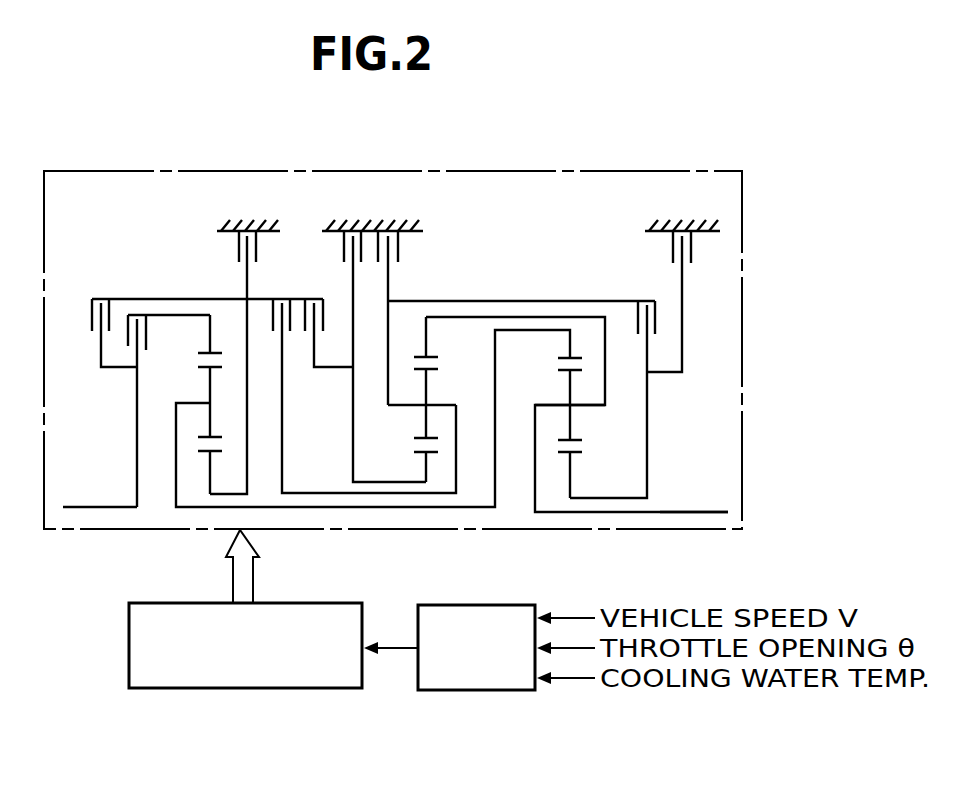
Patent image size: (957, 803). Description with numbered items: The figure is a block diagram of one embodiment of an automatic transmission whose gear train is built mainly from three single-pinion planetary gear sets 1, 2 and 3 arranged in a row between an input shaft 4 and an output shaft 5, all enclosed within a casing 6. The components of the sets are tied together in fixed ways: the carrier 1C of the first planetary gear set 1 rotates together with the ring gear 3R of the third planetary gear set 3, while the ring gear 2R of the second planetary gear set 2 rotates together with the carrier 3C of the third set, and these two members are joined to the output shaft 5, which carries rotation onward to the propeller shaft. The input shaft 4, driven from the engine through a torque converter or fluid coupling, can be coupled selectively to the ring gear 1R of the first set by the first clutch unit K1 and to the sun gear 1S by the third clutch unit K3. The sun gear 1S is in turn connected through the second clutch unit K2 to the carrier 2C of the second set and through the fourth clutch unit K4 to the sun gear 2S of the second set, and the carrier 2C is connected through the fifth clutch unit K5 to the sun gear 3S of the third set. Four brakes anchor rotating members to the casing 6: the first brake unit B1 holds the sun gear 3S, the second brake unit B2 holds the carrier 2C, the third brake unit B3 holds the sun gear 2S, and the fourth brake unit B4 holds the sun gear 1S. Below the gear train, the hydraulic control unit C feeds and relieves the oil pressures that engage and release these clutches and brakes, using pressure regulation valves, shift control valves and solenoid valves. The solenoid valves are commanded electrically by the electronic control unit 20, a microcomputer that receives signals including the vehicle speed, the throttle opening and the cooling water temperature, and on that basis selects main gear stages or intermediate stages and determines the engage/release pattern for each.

The first planetary gear set 1 is at (355, 443).
The second planetary gear set 2 is at (547, 444).
The third planetary gear set 3 is at (560, 456).
The input shaft 4 is at (108, 507).
The output shaft 5 is at (680, 512).
The casing 6 is at (256, 230).
The electronic control unit 20 is at (480, 690).
The hydraulic control unit C is at (235, 682).
The first clutch unit K1 is at (169, 411).
The second clutch unit K2 is at (361, 383).
The third clutch unit K3 is at (111, 320).
The fourth clutch unit K4 is at (329, 320).
The fifth clutch unit K5 is at (612, 386).
The first brake unit B1 is at (663, 301).
The second brake unit B2 is at (516, 318).
The third brake unit B3 is at (365, 356).
The fourth brake unit B4 is at (227, 362).
The ring gear 1R is at (220, 376).
The carrier 1C is at (204, 403).
The sun gear 1S is at (219, 465).
The ring gear 2R is at (429, 354).
The carrier 2C is at (427, 404).
The sun gear 2S is at (422, 454).
The ring gear 3R is at (565, 358).
The carrier 3C is at (560, 405).
The sun gear 3S is at (572, 455).